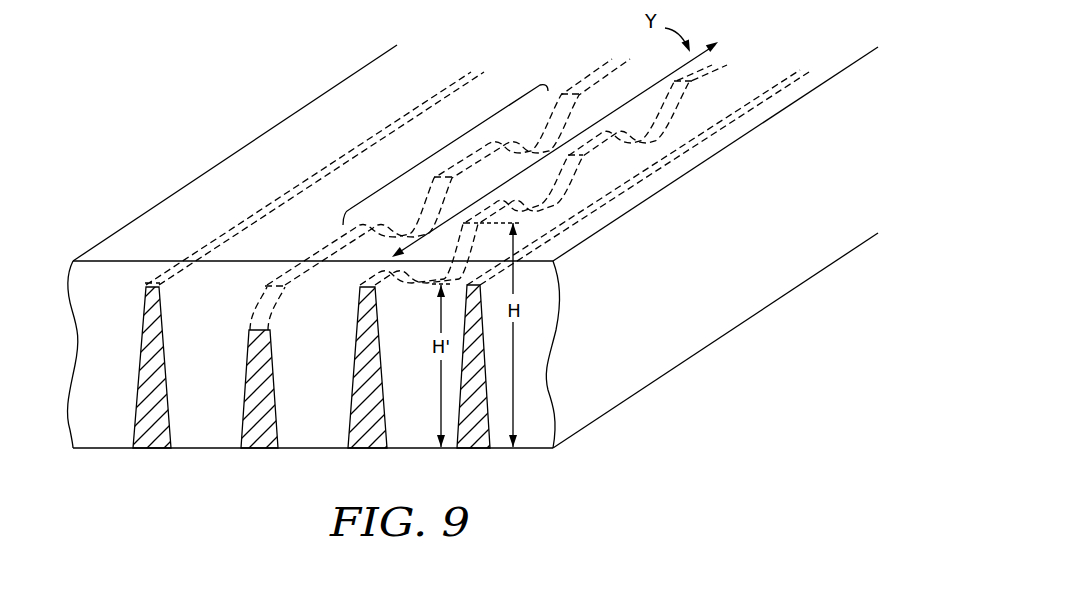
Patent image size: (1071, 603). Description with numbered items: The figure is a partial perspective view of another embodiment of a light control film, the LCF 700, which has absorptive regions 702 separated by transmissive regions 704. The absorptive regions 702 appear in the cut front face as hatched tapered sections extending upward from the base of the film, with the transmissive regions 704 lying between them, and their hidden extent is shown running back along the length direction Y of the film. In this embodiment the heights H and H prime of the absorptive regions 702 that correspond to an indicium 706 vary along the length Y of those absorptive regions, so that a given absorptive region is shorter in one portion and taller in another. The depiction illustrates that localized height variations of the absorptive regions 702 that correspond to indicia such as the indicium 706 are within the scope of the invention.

The LCF 700 is at (134, 142).
The absorptive regions 702 is at (147, 450).
The transmissive regions 704 is at (205, 438).
The indicium 706 is at (447, 140).